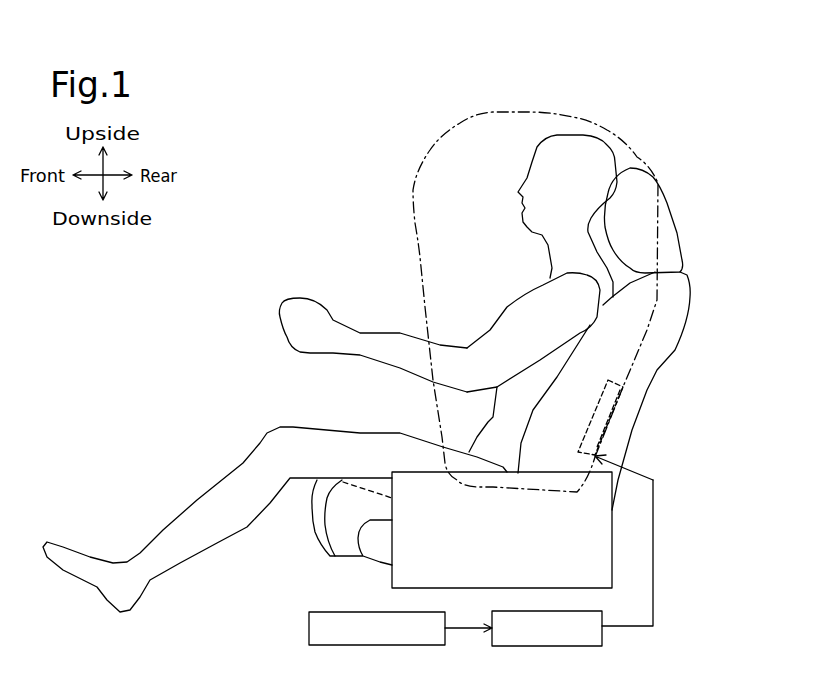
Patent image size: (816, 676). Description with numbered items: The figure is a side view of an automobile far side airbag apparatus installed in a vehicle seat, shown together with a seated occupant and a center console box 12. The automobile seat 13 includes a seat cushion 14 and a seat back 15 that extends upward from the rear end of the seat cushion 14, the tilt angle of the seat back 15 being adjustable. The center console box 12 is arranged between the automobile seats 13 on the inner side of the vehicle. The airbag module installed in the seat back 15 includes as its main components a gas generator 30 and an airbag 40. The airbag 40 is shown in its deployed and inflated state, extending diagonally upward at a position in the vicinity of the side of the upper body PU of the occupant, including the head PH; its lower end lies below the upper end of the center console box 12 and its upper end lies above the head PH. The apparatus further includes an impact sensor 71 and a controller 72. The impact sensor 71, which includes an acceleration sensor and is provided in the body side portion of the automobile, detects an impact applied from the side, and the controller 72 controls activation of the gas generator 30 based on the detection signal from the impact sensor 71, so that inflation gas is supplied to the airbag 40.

The center console box 12 is at (600, 548).
The automobile seat 13 is at (665, 437).
The seat cushion 14 is at (323, 532).
The seat back 15 is at (647, 387).
The gas generator 30 is at (600, 395).
The airbag 40 is at (413, 213).
The impact sensor 71 is at (322, 612).
The controller 72 is at (590, 608).
The head of the occupant PH is at (533, 148).
The upper body of the occupant PU is at (550, 272).